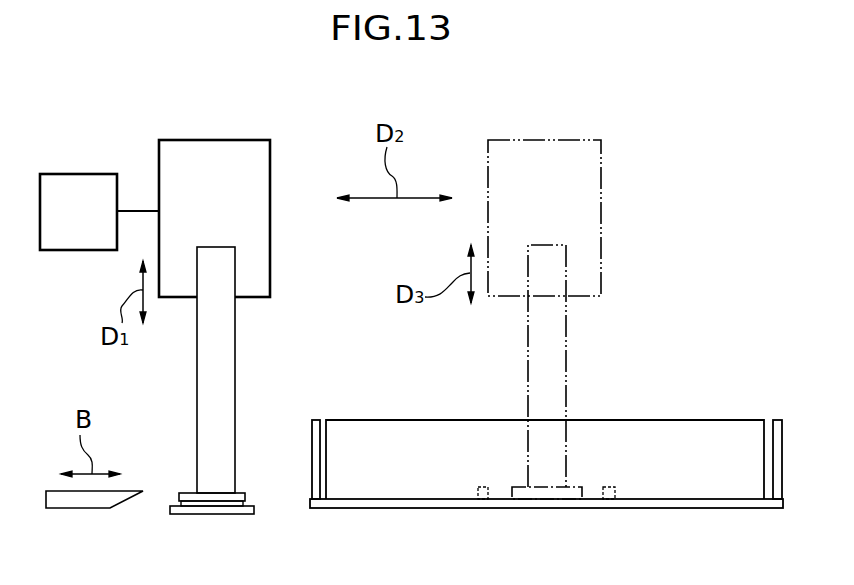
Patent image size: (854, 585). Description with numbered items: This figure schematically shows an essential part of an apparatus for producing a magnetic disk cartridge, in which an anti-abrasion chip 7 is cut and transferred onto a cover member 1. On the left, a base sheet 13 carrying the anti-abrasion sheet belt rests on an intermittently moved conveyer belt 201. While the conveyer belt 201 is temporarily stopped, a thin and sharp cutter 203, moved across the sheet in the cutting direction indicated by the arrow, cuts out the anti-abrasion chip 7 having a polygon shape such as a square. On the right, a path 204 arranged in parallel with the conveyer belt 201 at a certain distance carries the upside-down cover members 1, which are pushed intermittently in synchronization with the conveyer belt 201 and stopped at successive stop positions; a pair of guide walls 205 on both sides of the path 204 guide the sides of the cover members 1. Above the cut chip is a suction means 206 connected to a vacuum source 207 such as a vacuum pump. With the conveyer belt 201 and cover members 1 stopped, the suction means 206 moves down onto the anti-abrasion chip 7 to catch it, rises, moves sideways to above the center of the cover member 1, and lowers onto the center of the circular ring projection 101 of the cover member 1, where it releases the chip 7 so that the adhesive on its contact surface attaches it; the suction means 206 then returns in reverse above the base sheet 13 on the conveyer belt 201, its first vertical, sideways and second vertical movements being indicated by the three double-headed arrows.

The cover member 1 is at (622, 418).
The anti-abrasion chip 7 is at (193, 493).
The base sheet 13 is at (192, 502).
The circular ring projection 101 is at (618, 492).
The conveyer belt 201 is at (242, 514).
The cutter 203 is at (90, 500).
The path 204 is at (392, 503).
The guide wall 205 is at (315, 418).
The suction means 206 is at (270, 240).
The vacuum source 207 is at (77, 233).